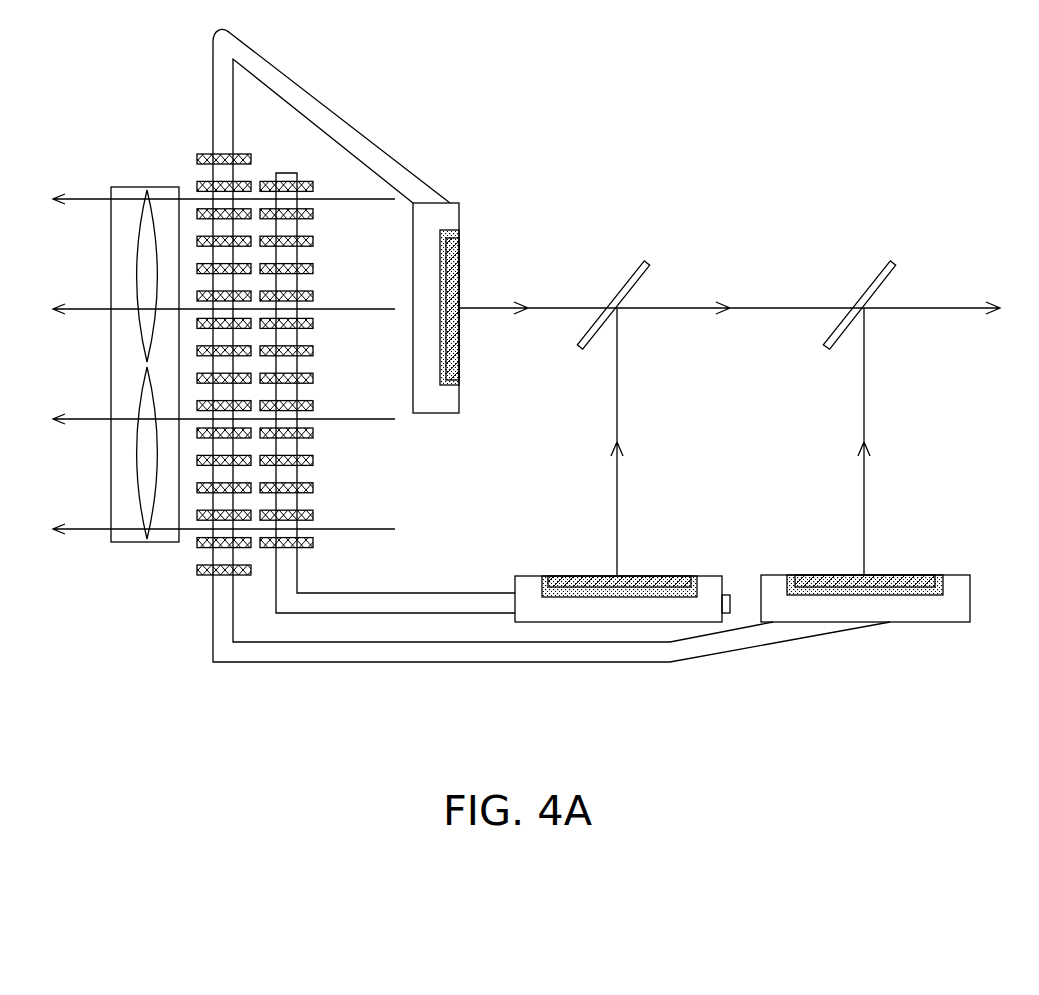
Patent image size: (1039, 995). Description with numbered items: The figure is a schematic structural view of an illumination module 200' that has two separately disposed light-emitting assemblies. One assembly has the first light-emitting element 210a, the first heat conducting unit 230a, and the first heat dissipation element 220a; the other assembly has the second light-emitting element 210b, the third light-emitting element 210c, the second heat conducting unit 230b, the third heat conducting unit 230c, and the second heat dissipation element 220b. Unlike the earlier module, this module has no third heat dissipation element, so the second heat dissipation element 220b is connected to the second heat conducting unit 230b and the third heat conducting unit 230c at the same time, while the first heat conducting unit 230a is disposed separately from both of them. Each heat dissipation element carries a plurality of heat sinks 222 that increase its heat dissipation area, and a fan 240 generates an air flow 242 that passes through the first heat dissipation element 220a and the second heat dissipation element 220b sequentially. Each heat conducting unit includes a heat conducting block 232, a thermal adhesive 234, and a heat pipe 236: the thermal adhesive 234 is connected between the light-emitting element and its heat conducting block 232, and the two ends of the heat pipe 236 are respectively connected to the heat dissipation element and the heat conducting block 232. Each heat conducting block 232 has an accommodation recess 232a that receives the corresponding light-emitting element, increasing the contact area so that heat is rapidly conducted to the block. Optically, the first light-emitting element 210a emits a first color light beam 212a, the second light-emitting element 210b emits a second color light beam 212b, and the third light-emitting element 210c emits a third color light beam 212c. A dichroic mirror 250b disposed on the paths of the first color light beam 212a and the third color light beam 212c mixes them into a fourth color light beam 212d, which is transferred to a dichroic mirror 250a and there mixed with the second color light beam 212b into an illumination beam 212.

The illumination module 200' is at (521, 394).
The fan 240 is at (145, 222).
The air flow 242 is at (80, 199).
The heat sinks 222 is at (200, 514).
The first heat dissipation element 220a is at (270, 548).
The second heat dissipation element 220b is at (205, 575).
The first heat conducting unit 230a is at (503, 637).
The second heat conducting unit 230b is at (337, 679).
The third heat conducting unit 230c is at (384, 103).
The heat pipe 236 is at (432, 603).
The thermal adhesive 234 is at (557, 590).
The heat conducting block 232 is at (597, 605).
The accommodation recess 232a is at (619, 667).
The first light-emitting element 210a is at (600, 637).
The second light-emitting element 210b is at (822, 575).
The third light-emitting element 210c is at (460, 348).
The illumination beam 212 is at (952, 306).
The first color light beam 212a is at (620, 489).
The second color light beam 212b is at (866, 487).
The third color light beam 212c is at (563, 306).
The fourth color light beam 212d is at (697, 310).
The dichroic mirror 250a is at (862, 298).
The dichroic mirror 250b is at (683, 250).